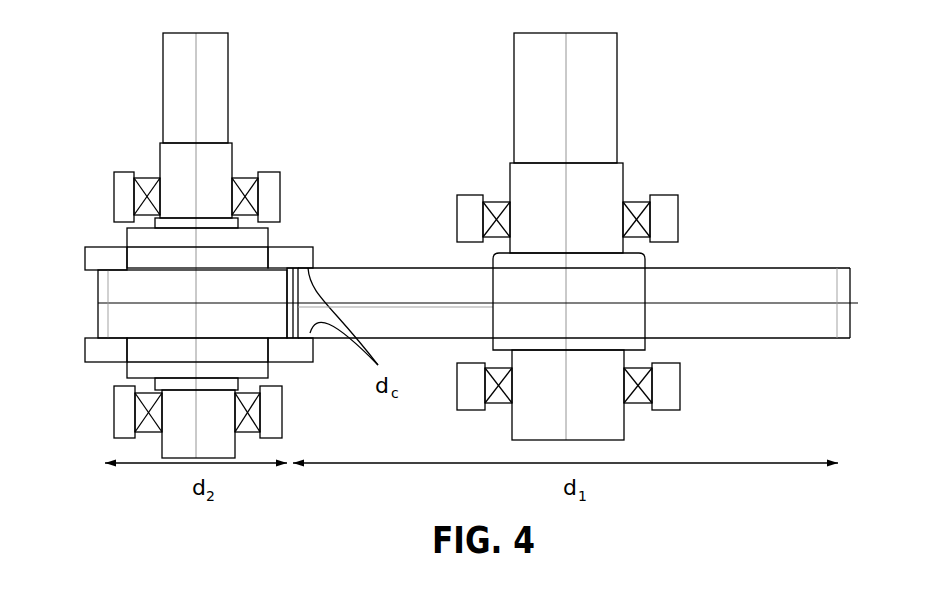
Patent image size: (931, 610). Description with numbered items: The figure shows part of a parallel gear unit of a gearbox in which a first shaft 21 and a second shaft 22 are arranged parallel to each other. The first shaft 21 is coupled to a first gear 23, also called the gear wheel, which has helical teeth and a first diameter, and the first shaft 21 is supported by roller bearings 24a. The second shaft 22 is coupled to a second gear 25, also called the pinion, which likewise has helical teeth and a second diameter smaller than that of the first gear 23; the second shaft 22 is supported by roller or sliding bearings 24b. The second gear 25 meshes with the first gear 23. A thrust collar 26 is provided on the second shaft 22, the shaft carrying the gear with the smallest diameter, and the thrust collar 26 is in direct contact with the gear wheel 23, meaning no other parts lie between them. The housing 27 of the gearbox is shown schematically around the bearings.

The first shaft 21 is at (607, 78).
The second shaft 22 is at (222, 87).
The first gear 23 is at (360, 275).
The roller bearings 24a is at (637, 207).
The roller or sliding bearings 24b is at (248, 180).
The second gear 25 is at (122, 290).
The thrust collar 26 is at (290, 255).
The housing 27 is at (118, 190).